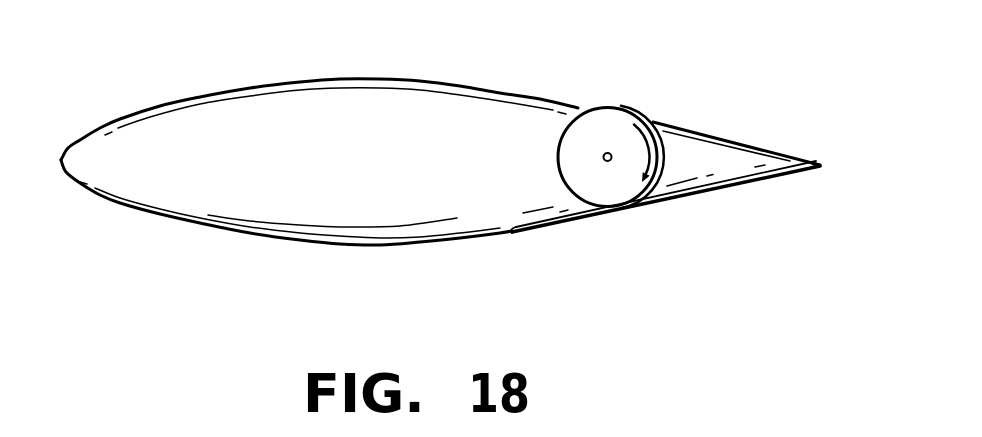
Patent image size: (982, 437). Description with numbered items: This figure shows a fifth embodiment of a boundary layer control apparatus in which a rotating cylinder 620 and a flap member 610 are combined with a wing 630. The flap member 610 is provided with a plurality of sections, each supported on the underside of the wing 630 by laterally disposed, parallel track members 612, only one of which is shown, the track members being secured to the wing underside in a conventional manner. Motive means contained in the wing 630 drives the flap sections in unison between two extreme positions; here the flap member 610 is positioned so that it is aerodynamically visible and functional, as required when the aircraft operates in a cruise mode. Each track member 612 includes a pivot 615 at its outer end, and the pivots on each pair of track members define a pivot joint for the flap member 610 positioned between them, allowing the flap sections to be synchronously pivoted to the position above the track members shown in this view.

The wing 630 is at (218, 86).
The rotating cylinder 620 is at (626, 108).
The flap member 610 is at (725, 140).
The track member 612 is at (560, 233).
The pivot 615 is at (820, 167).